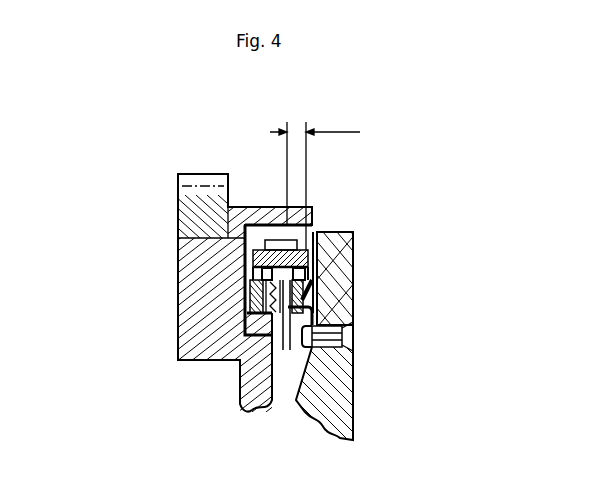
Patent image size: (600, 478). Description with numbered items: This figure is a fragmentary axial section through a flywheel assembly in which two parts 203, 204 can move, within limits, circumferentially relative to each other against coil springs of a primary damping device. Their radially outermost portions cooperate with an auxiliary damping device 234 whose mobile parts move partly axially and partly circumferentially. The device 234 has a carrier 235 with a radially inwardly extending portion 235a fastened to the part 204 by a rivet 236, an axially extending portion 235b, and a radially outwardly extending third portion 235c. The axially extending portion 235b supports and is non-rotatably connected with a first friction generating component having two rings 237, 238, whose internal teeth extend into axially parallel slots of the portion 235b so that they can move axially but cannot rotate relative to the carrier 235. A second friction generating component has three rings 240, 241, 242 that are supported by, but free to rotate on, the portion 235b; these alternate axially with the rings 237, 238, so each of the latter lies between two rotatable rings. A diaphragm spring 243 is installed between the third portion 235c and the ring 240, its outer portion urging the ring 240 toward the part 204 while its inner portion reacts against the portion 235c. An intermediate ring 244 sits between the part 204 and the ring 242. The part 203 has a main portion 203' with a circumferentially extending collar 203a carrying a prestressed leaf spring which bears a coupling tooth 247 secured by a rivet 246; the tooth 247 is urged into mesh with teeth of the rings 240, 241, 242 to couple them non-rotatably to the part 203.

The part 203 is at (264, 293).
The main portion 203' is at (184, 235).
The collar 203a is at (265, 215).
The part 204 is at (323, 238).
The auxiliary damping device 234 is at (280, 201).
The carrier 235 is at (162, 385).
The radially inwardly extending portion 235a is at (352, 357).
The axially extending portion 235b is at (210, 362).
The radially outwardly extending third portion 235c is at (245, 322).
The rivet 236 is at (338, 326).
The ring 237 is at (242, 382).
The ring 238 is at (288, 317).
The ring 240 is at (253, 275).
The ring 241 is at (250, 295).
The ring 242 is at (314, 253).
The diaphragm spring 243 is at (262, 305).
The intermediate ring 244 is at (313, 290).
The rivet 246 is at (178, 207).
The tooth 247 is at (253, 260).